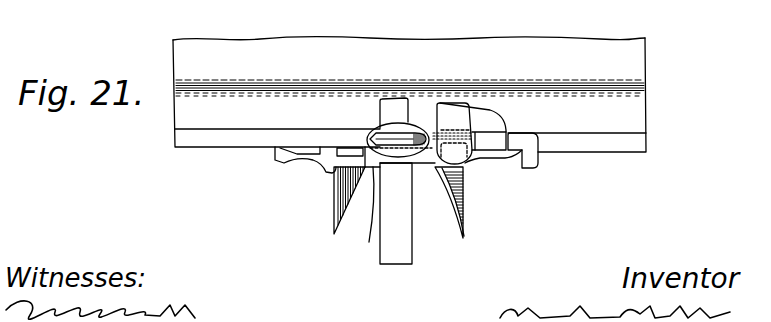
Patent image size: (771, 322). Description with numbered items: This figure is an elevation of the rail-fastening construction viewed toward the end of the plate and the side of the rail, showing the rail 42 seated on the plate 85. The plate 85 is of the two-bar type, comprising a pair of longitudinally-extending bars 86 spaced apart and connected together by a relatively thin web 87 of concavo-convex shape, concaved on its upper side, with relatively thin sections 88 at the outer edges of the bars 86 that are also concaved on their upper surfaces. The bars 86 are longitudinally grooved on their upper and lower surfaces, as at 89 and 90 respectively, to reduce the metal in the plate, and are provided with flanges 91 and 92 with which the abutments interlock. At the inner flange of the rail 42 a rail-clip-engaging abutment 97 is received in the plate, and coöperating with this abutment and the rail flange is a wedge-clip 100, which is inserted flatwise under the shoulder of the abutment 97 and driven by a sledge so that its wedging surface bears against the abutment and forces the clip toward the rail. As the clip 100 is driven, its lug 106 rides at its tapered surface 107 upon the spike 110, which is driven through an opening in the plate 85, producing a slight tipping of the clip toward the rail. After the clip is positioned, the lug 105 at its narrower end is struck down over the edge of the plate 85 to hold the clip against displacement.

The rail 42 is at (550, 56).
The plate 85 is at (423, 165).
The longitudinally-extending bars 86 is at (365, 169).
The web 87 is at (403, 182).
The thin sections 88 is at (302, 166).
The upper groove 89 is at (350, 160).
The lower groove 90 is at (340, 236).
The flange 91 is at (287, 112).
The flange 92 is at (330, 178).
The rail-clip-engaging abutment 97 is at (455, 127).
The wedge-clip 100 is at (432, 125).
The lug 105 is at (533, 138).
The lug 106 is at (388, 116).
The tapered outer surface 107 is at (413, 122).
The spike 110 is at (400, 243).